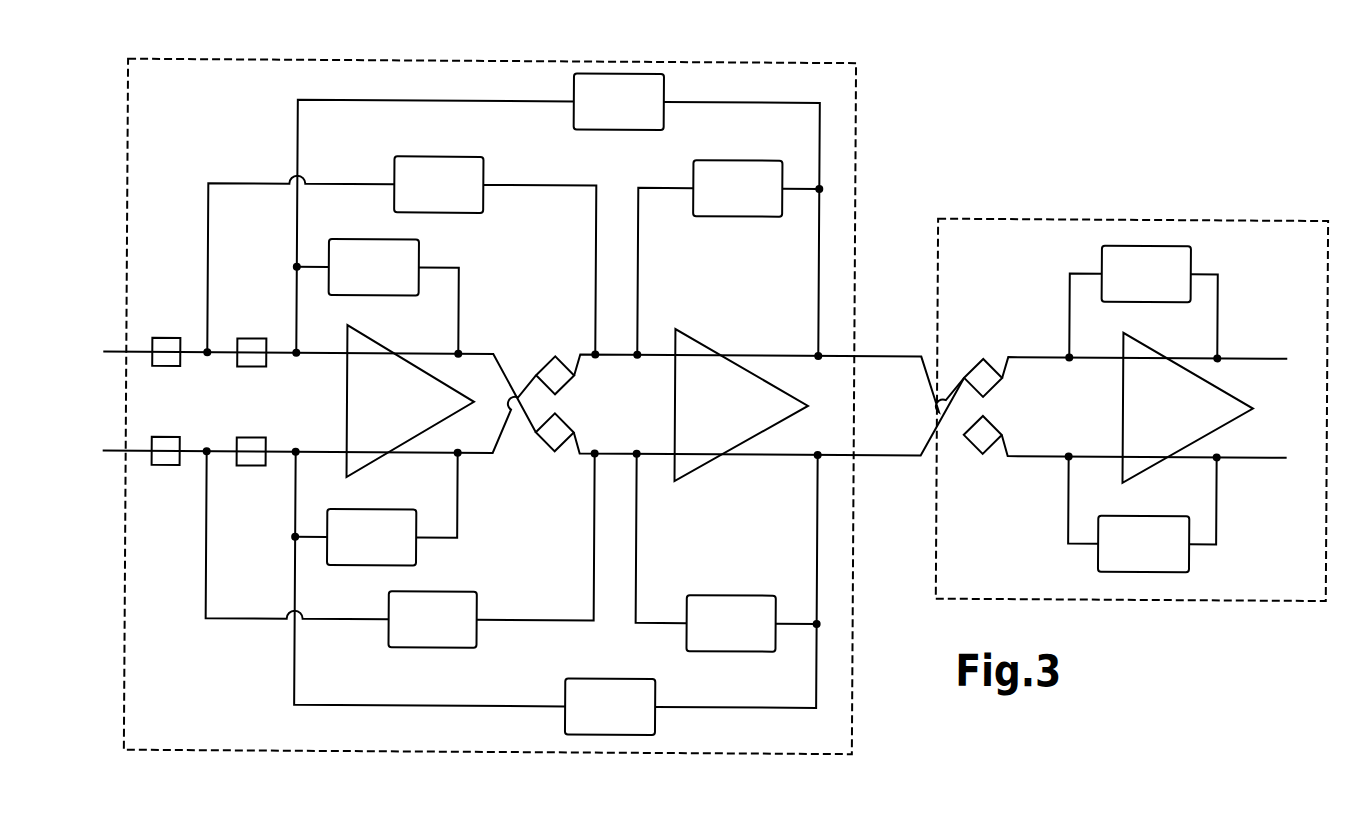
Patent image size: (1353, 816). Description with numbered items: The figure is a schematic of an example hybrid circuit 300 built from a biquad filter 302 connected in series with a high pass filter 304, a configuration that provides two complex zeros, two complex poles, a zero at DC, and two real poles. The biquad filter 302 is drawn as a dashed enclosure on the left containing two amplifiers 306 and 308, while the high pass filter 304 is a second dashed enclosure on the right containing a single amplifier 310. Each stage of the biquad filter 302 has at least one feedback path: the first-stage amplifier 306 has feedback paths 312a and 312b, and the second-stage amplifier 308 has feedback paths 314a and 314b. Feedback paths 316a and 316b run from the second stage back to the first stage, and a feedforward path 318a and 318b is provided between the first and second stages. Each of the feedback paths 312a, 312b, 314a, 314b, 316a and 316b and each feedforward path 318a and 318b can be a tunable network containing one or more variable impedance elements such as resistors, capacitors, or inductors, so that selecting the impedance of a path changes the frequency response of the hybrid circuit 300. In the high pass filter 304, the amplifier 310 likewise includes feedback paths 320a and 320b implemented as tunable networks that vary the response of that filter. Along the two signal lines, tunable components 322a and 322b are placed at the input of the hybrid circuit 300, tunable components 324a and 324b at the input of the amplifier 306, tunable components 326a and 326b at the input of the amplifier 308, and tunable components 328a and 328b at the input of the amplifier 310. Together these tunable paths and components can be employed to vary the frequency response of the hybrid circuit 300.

The hybrid circuit 300 is at (930, 120).
The biquad filter 302 is at (360, 61).
The high pass filter 304 is at (1216, 216).
The amplifier 306 is at (347, 372).
The amplifier 308 is at (675, 378).
The amplifier 310 is at (1228, 396).
The feedback path 312a is at (420, 244).
The feedback path 312b is at (417, 557).
The feedback path 314a is at (760, 215).
The feedback path 314b is at (722, 594).
The feedback path 316a is at (648, 130).
The feedback path 316b is at (657, 690).
The feedforward path 318a is at (455, 157).
The feedforward path 318b is at (478, 648).
The feedback path 320a is at (1180, 242).
The feedback path 320b is at (1185, 568).
The tunable component 322a is at (163, 340).
The tunable component 322b is at (160, 467).
The tunable component 324a is at (250, 340).
The tunable component 324b is at (250, 467).
The tunable component 326a is at (538, 370).
The tunable component 326b is at (540, 437).
The tunable component 328a is at (970, 368).
The tunable component 328b is at (970, 440).